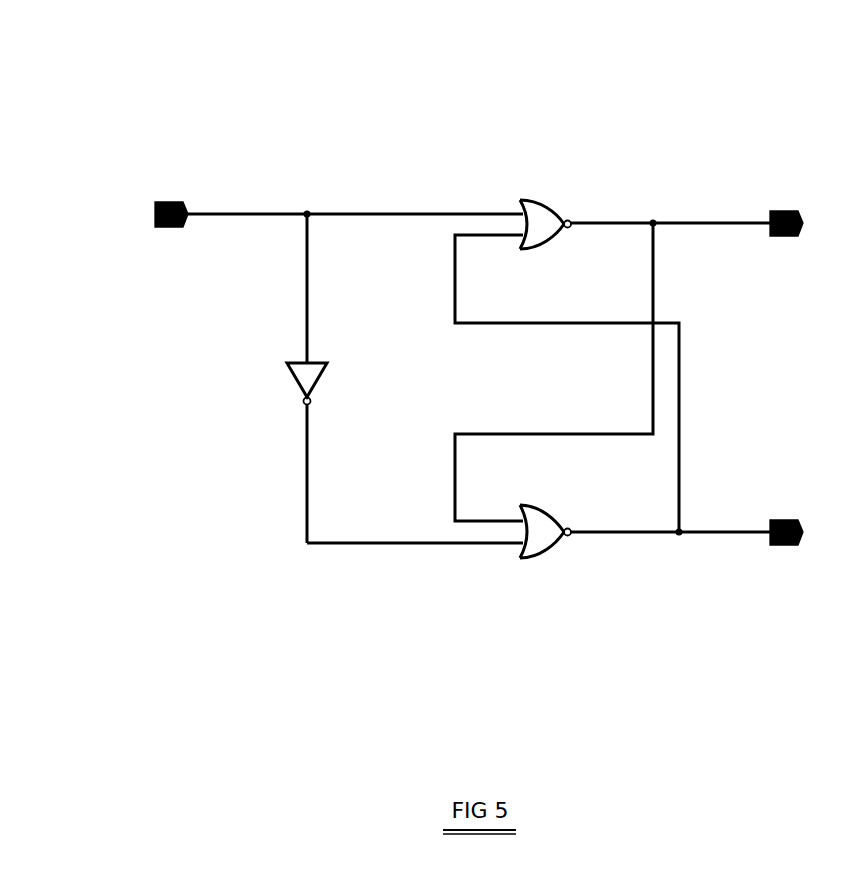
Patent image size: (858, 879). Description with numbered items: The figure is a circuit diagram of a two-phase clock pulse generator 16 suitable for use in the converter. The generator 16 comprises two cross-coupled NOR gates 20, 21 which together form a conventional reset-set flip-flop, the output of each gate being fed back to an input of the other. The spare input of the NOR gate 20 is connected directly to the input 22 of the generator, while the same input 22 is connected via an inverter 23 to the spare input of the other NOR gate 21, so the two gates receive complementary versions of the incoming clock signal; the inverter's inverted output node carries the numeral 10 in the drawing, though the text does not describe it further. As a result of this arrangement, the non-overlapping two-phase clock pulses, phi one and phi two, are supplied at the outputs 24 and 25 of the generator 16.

The generator 16 is at (512, 138).
The input 22 is at (168, 204).
The NOR gate 20 is at (540, 215).
The NOR gate 21 is at (538, 542).
The inverter 23 is at (318, 368).
The inverted clock signal node B 10 is at (353, 436).
The output 24 is at (795, 237).
The output 25 is at (795, 546).